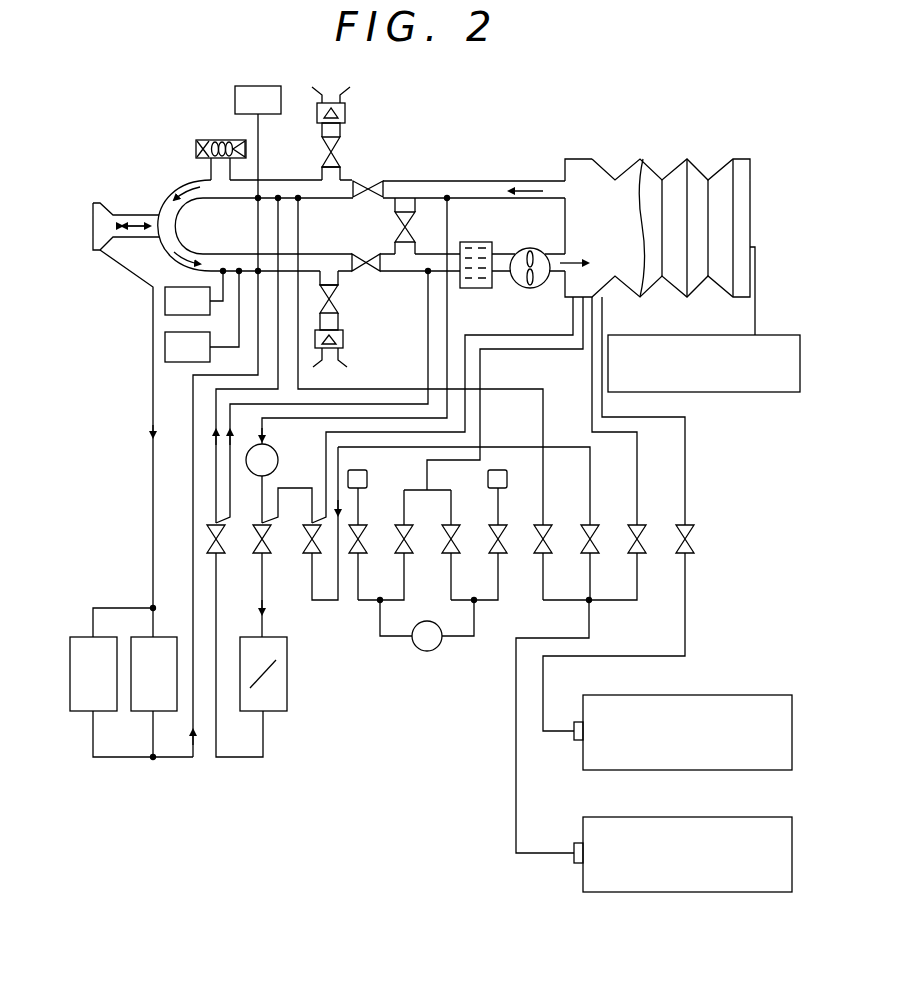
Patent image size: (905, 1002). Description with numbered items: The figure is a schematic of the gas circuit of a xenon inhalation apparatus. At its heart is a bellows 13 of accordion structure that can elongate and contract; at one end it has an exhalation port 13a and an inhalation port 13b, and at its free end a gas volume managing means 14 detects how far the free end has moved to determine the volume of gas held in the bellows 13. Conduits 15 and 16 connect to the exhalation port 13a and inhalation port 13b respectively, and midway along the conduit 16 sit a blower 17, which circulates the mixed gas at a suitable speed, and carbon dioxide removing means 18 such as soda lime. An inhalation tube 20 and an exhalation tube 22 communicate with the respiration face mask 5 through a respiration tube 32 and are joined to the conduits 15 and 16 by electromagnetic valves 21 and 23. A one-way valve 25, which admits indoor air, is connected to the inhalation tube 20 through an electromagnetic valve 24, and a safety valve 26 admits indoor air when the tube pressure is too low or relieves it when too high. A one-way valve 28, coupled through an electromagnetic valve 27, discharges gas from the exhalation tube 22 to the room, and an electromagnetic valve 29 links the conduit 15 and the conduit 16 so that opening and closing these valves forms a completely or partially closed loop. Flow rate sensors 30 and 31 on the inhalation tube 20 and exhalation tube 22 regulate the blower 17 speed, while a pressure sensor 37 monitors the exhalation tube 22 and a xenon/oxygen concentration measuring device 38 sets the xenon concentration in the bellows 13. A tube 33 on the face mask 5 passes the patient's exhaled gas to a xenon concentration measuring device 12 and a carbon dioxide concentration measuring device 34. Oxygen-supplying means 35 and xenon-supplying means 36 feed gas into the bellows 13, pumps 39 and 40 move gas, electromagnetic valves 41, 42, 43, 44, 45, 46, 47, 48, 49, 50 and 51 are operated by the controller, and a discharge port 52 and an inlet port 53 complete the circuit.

The respiration face mask 5 is at (101, 203).
The xenon concentration measuring device 12 is at (163, 640).
The bellows 13 is at (690, 177).
The exhalation port 13a is at (564, 176).
The inhalation port 13b is at (563, 275).
The gas volume managing means 14 is at (727, 392).
The conduit 15 is at (497, 180).
The conduit 16 is at (502, 273).
The blower 17 is at (531, 248).
The carbon dioxide removing means 18 is at (478, 242).
The inhalation tube 20 is at (290, 185).
The electromagnetic valve 21 is at (370, 186).
The exhalation tube 22 is at (248, 254).
The electromagnetic valve 23 is at (366, 256).
The electromagnetic valve 24 is at (342, 150).
The one-way valve 25 is at (346, 112).
The safety valve 26 is at (210, 140).
The electromagnetic valve 27 is at (340, 300).
The one-way valve 28 is at (345, 340).
The electromagnetic valve 29 is at (414, 232).
The flow rate sensor 30 is at (257, 86).
The flow rate sensor 31 is at (171, 362).
The respiration tube 32 is at (143, 215).
The tube 33 is at (153, 377).
The carbon dioxide concentration measuring device 34 is at (84, 640).
The oxygen-supplying means 35 is at (716, 817).
The xenon-supplying means 36 is at (716, 695).
The pressure sensor 37 is at (170, 287).
The xenon/oxygen concentration measuring device 38 is at (288, 682).
The pump 39 is at (426, 651).
The pump 40 is at (278, 460).
The electromagnetic valve 41 is at (688, 555).
The electromagnetic valve 42 is at (640, 555).
The electromagnetic valve 43 is at (593, 555).
The electromagnetic valve 44 is at (546, 555).
The electromagnetic valve 45 is at (501, 555).
The electromagnetic valve 46 is at (454, 555).
The electromagnetic valve 47 is at (407, 555).
The electromagnetic valve 48 is at (361, 555).
The electromagnetic valve 49 is at (315, 555).
The electromagnetic valve 50 is at (265, 555).
The electromagnetic valve 51 is at (219, 555).
The discharge port 52 is at (367, 478).
The inlet port 53 is at (507, 480).